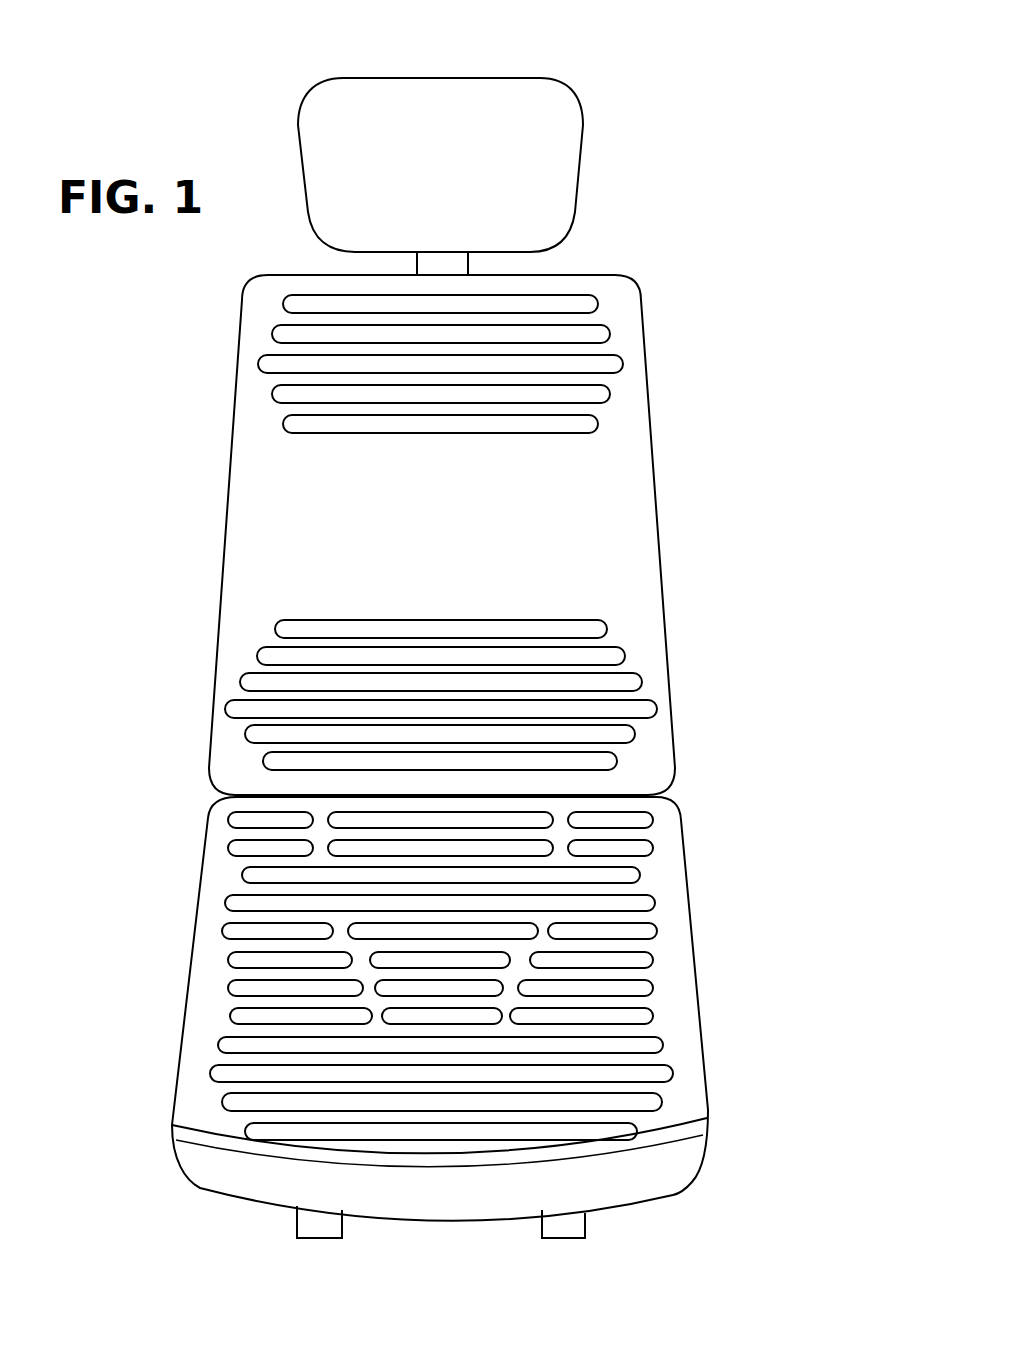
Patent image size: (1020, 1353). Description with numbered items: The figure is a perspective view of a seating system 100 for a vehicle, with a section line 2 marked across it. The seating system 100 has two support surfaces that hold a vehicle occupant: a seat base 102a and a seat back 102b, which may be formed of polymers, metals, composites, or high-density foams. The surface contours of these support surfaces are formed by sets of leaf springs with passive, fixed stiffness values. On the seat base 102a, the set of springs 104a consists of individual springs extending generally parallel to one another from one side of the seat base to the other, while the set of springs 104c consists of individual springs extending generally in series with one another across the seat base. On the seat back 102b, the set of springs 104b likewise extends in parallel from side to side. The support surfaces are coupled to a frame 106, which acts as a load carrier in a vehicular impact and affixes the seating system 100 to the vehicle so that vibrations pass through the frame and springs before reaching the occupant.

The section line 2- 2 is at (493, 62).
The seating system 100 is at (672, 196).
The seat back 102b is at (283, 601).
The seat base 102a is at (221, 1028).
The set of springs 104b is at (617, 722).
The set of springs 104c is at (322, 952).
The set of springs 104a is at (648, 1088).
The frame 106 is at (587, 1222).